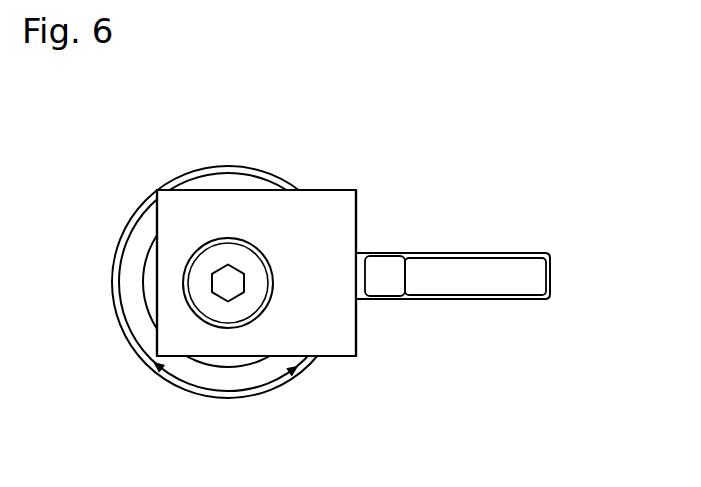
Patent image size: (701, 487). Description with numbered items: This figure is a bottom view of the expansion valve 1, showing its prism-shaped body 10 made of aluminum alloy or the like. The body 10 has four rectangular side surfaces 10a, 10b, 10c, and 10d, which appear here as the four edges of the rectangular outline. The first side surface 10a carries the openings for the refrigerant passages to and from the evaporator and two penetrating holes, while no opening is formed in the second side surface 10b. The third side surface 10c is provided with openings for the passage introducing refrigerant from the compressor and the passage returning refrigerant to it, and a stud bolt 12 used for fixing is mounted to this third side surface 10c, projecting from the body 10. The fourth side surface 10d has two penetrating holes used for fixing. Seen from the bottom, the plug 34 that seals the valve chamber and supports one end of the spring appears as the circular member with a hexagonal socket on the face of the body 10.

The expansion valve 1 is at (414, 178).
The body 10 is at (360, 203).
The first side surface 10a is at (322, 189).
The second side surface 10b is at (156, 224).
The third side surface 10c is at (357, 309).
The fourth side surface 10d is at (320, 357).
The stud bolt 12 is at (485, 252).
The plug 34 is at (212, 285).